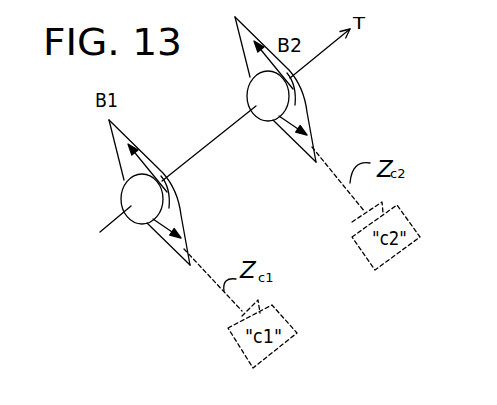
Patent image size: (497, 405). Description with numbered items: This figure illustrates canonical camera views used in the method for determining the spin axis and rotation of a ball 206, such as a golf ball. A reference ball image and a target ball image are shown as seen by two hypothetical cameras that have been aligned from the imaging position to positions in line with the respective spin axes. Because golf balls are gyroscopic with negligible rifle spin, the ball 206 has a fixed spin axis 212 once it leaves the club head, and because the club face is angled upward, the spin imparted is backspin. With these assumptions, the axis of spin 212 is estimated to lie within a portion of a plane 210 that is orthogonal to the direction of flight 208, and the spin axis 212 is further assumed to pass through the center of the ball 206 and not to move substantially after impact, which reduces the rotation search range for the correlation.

The ball 206 is at (137, 224).
The direction of flight 208 is at (338, 43).
The plane 210 is at (180, 262).
The spin axis 212 is at (210, 116).